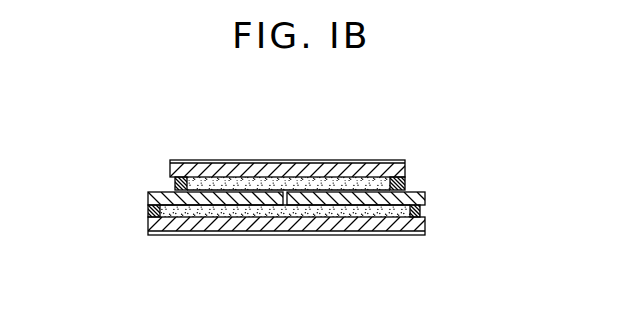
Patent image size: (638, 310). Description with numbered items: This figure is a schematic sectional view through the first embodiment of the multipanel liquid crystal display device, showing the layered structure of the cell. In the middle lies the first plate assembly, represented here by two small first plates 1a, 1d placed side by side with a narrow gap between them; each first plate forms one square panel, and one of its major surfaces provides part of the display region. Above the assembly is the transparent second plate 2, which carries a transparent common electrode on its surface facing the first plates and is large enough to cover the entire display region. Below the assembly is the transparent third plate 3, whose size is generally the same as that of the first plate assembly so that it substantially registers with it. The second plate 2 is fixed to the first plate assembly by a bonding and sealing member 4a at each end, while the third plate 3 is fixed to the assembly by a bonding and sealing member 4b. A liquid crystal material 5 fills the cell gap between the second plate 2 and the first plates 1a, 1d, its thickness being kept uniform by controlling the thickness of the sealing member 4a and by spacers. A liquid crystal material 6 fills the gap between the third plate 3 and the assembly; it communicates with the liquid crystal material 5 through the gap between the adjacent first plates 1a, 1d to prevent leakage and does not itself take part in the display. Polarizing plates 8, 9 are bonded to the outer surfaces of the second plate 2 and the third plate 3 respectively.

The first plate 1a is at (148, 198).
The first plate 1d is at (426, 199).
The second plate 2 is at (407, 166).
The third plate 3 is at (427, 226).
The bonding and sealing member 4a is at (176, 185).
The bonding and sealing member 4b is at (150, 212).
The liquid crystal material 5 is at (331, 188).
The liquid crystal material 6 is at (330, 217).
The polarizing plate 8 is at (373, 162).
The polarizing plate 9 is at (397, 235).